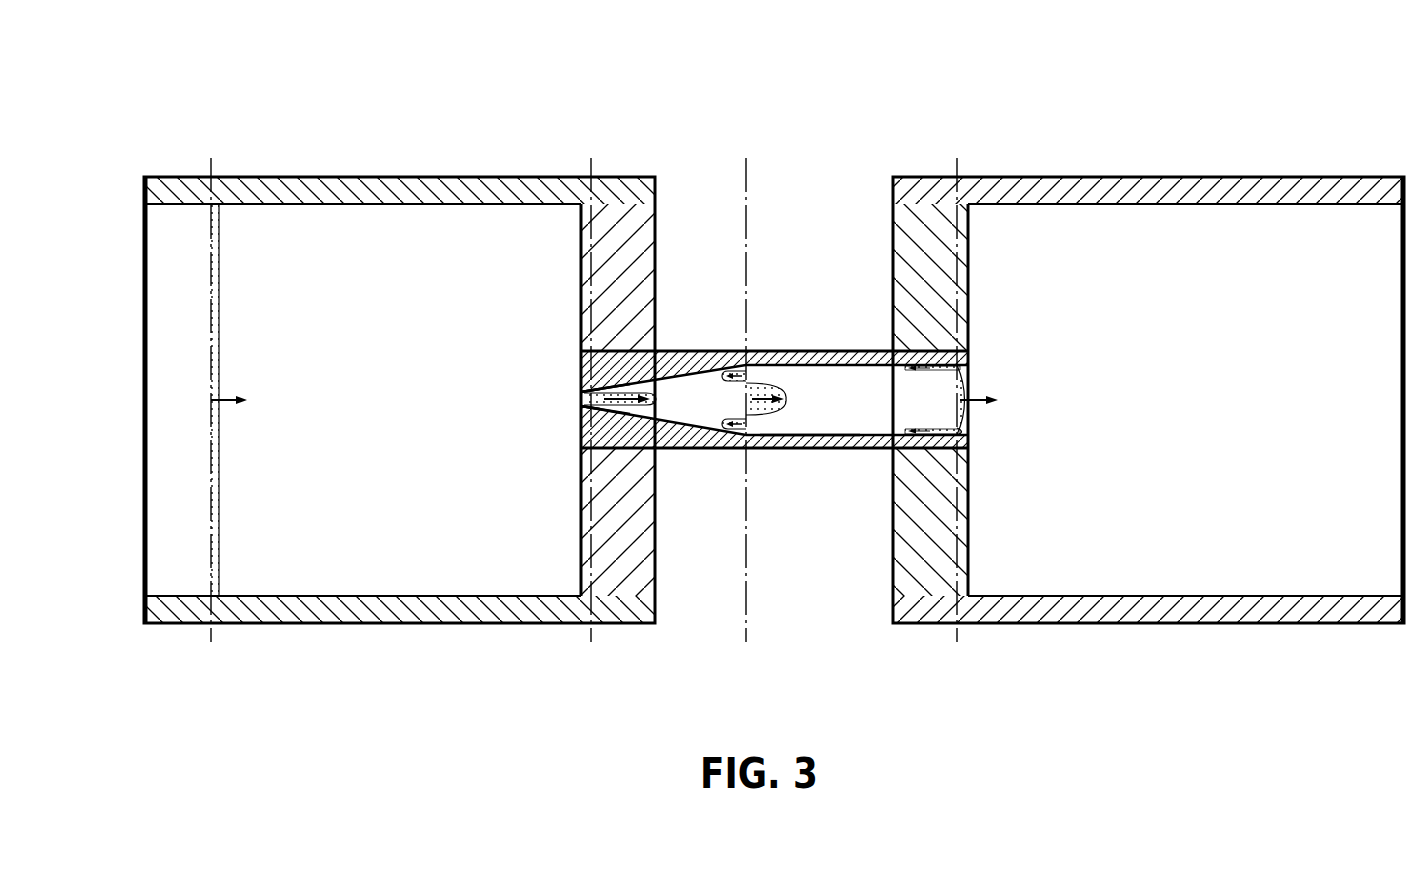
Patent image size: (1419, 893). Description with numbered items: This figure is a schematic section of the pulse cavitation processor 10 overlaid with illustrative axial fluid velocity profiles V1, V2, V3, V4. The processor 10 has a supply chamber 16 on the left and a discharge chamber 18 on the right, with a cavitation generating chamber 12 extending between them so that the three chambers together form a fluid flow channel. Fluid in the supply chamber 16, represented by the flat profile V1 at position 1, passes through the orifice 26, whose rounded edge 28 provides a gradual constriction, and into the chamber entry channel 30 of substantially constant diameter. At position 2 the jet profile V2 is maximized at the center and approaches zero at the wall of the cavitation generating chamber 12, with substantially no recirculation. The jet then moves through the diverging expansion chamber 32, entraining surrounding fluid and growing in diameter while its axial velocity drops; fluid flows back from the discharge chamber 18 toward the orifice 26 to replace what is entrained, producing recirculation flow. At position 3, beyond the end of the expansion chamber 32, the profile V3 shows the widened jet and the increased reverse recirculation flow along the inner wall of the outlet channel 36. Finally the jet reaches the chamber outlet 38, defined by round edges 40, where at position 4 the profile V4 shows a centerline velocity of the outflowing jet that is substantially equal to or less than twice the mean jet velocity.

The pulse cavitation processor 10 is at (184, 80).
The cavitation generating chamber 12 is at (734, 389).
The supply chamber 16 is at (403, 177).
The discharge chamber 18 is at (1153, 177).
The orifice 26 is at (580, 399).
The rounded edge 28 is at (580, 406).
The chamber entry channel 30 is at (582, 392).
The expansion chamber 32 is at (672, 378).
The outlet channel 36 is at (815, 427).
The chamber outlet 38 is at (970, 419).
The round edges 40 is at (970, 427).
The position 1 is at (213, 166).
The position 2 is at (593, 166).
The position 3 is at (748, 166).
The position 4 is at (959, 166).
The velocity profile v1 V1 is at (222, 355).
The velocity profile v2 V2 is at (643, 406).
The velocity profile v3 V3 is at (723, 381).
The velocity profile v4 V4 is at (1022, 427).